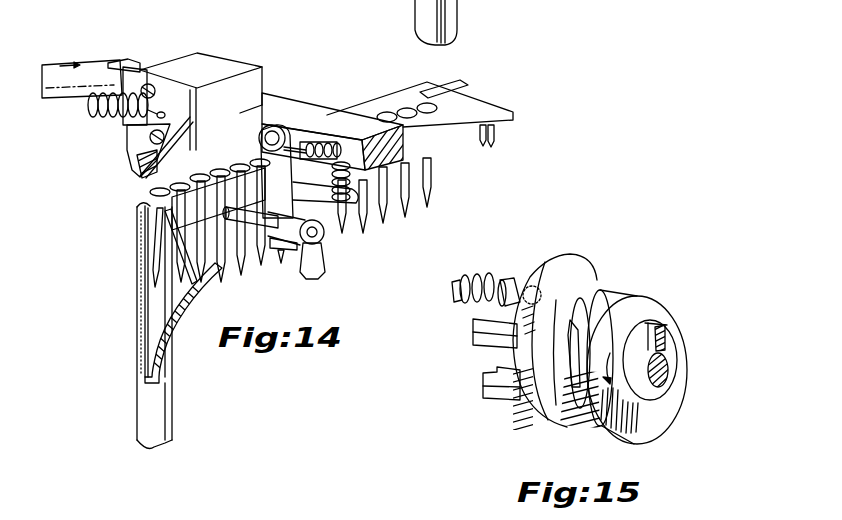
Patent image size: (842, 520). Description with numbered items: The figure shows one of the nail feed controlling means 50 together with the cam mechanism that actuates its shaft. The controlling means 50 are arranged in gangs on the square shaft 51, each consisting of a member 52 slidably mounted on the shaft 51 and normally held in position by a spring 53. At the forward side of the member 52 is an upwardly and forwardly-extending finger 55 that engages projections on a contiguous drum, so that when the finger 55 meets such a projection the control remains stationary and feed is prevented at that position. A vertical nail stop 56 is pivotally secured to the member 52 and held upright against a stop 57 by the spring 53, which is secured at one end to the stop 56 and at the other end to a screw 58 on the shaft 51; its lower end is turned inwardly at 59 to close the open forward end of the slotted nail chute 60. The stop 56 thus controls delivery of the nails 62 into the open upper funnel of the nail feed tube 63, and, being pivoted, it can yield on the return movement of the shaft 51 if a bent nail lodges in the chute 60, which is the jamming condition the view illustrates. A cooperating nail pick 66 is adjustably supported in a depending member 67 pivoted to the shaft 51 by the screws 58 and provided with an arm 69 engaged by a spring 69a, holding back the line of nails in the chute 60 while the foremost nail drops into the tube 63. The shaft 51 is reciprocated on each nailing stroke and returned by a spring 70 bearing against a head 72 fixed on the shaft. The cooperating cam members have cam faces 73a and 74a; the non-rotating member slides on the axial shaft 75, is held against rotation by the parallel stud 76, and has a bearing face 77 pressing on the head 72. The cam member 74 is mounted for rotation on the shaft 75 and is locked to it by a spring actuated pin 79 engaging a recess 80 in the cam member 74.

In FIG. 14, the controlling means 50 is at (176, 54).
In FIG. 14, the square shaft 51 is at (84, 62).
In FIG. 15, the square shaft 51 is at (458, 286).
In FIG. 14, the member 52 is at (214, 67).
In FIG. 14, the spring 53 is at (96, 115).
In FIG. 14, the finger or projection 55 is at (127, 60).
In FIG. 14, the vertical nail stop 56 is at (147, 140).
In FIG. 14, the stop 57 is at (149, 83).
In FIG. 14, the screw 58 is at (259, 136).
In FIG. 14, the inwardly turned lower end 59 is at (140, 172).
In FIG. 14, the slotted nail chute 60 is at (468, 99).
In FIG. 14, the nails 62 is at (422, 103).
In FIG. 14, the nail feed tube 63 is at (137, 397).
In FIG. 14, the nail pick 66 is at (209, 228).
In FIG. 14, the depending member 67 is at (277, 185).
In FIG. 14, the arm 69 is at (327, 212).
In FIG. 14, the spring 69a is at (353, 188).
In FIG. 15, the spring 70 is at (475, 276).
In FIG. 15, the head 72 is at (511, 283).
In FIG. 15, the cam face 73a is at (562, 356).
In FIG. 15, the cam member 74 is at (652, 432).
In FIG. 15, the cam face 74a is at (591, 301).
In FIG. 15, the axial shaft 75 is at (669, 372).
In FIG. 15, the parallel stud 76 is at (487, 387).
In FIG. 15, the bearing face 77 is at (543, 263).
In FIG. 15, the spring actuated pin 79 is at (656, 330).
In FIG. 15, the recess 80 is at (668, 339).